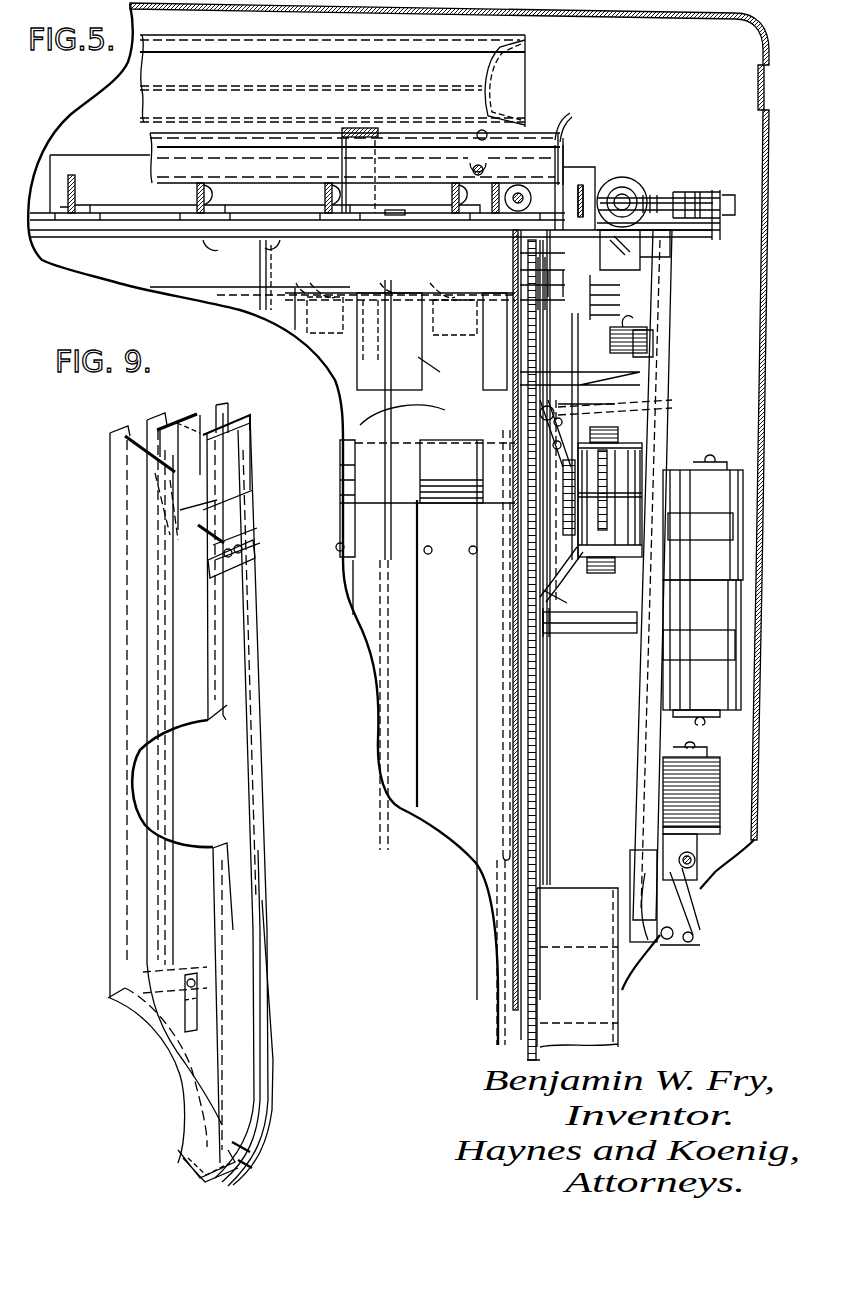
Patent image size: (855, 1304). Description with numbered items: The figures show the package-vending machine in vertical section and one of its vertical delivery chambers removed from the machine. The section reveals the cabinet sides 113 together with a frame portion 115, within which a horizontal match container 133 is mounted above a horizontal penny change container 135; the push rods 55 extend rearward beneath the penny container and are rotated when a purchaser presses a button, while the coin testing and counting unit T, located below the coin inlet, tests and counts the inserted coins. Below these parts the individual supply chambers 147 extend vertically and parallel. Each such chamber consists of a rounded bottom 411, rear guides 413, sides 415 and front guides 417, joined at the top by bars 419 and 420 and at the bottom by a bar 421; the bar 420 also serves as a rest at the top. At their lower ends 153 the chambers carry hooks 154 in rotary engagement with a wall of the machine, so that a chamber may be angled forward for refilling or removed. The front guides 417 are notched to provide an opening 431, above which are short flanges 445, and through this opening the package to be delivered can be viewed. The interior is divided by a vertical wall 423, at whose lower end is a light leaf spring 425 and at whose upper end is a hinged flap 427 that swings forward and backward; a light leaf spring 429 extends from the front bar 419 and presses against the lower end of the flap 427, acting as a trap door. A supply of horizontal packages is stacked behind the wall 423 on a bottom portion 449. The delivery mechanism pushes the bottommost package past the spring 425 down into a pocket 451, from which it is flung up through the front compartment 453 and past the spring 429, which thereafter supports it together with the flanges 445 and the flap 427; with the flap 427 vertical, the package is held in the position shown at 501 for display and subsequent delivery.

In FIG. 5, the sides 113 is at (757, 334).
In FIG. 5, the frame 115 is at (85, 121).
In FIG. 5, the horizontal match container 133 is at (328, 60).
In FIG. 5, the horizontal penny change container 135 is at (296, 170).
In FIG. 5, the push rods 55 is at (68, 196).
In FIG. 5, the bar 420 is at (262, 251).
In FIG. 9, the bar 420 is at (223, 412).
In FIG. 5, the held package position 501 is at (318, 283).
In FIG. 5, the front bar 419 is at (427, 573).
In FIG. 9, the front bar 419 is at (255, 548).
In FIG. 5, the hinged flap 427 is at (380, 345).
In FIG. 9, the hinged flap 427 is at (193, 415).
In FIG. 5, the short flanges 445 is at (412, 323).
In FIG. 9, the short flanges 445 is at (232, 470).
In FIG. 5, the opening 431 is at (368, 412).
In FIG. 9, the opening 431 is at (235, 506).
In FIG. 5, the light leaf spring 429 is at (445, 443).
In FIG. 9, the light leaf spring 429 is at (238, 520).
In FIG. 5, the sides 415 is at (512, 418).
In FIG. 9, the sides 415 is at (138, 603).
In FIG. 5, the vertical wall 423 is at (438, 630).
In FIG. 9, the vertical wall 423 is at (197, 808).
In FIG. 5, the supply chambers 147 is at (408, 648).
In FIG. 9, the supply chambers 147 is at (266, 800).
In FIG. 5, the front compartment 453 is at (447, 682).
In FIG. 9, the front compartment 453 is at (232, 625).
In FIG. 5, the front guides 417 is at (485, 772).
In FIG. 9, the front guides 417 is at (222, 688).
In FIG. 5, the coin testing and counting unit T is at (640, 722).
In FIG. 9, the rear guides 413 is at (150, 407).
In FIG. 9, the light leaf spring 425 is at (198, 1000).
In FIG. 9, the bottom portion 449 is at (130, 1010).
In FIG. 9, the pocket 451 is at (245, 1068).
In FIG. 9, the rounded bottom 411 is at (172, 1055).
In FIG. 9, the lower ends 153 is at (186, 1118).
In FIG. 9, the hooks 154 is at (183, 1151).
In FIG. 9, the bar 421 is at (228, 1145).